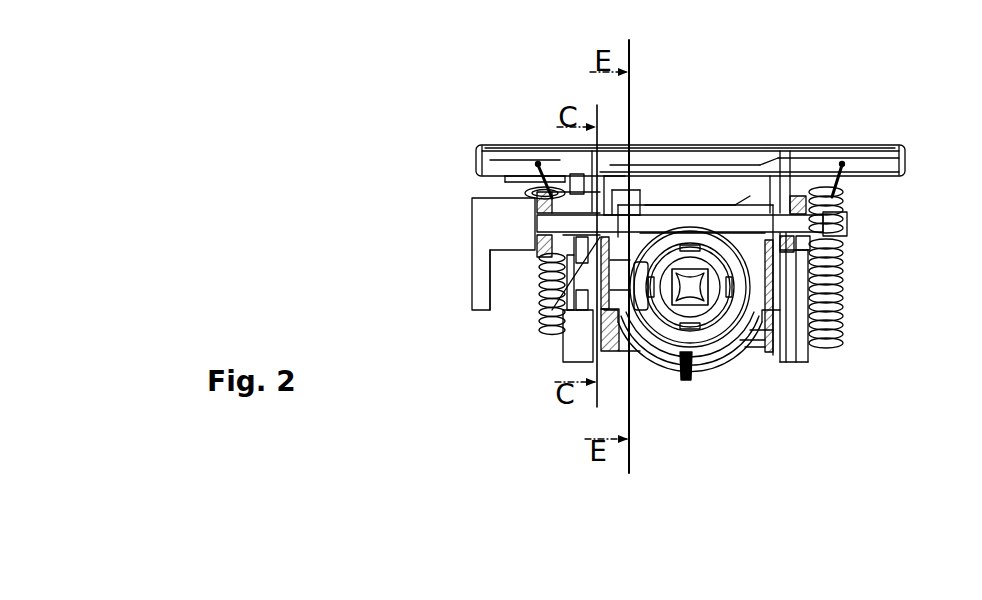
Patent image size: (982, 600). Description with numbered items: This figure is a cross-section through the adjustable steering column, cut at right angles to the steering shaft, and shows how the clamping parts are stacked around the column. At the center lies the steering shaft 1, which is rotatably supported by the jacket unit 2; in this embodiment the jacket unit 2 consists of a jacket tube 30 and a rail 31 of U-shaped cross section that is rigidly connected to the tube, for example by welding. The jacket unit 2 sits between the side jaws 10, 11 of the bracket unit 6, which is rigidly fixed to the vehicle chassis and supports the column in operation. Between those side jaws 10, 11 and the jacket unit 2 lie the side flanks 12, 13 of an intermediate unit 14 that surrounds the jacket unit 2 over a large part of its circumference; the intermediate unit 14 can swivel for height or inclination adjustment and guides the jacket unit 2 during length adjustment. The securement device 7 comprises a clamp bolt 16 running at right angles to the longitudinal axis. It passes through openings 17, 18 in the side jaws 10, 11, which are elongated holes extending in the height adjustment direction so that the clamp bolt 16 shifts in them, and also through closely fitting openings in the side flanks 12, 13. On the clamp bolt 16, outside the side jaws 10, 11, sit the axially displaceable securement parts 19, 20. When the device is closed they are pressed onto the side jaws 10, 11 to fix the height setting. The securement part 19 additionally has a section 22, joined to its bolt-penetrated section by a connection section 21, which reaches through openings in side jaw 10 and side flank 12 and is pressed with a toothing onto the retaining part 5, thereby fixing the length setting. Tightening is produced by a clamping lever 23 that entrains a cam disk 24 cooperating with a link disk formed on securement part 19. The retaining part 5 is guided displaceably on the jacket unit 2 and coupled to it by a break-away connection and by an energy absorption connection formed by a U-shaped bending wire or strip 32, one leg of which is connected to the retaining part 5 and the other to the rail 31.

The steering shaft 1 is at (725, 356).
The jacket unit 2 is at (772, 289).
The retaining part 5 is at (620, 335).
The bracket unit 6 is at (650, 147).
The securement device 7 is at (470, 213).
The side jaw 10 is at (578, 172).
The side jaw 11 is at (790, 176).
The side flank 12 is at (538, 243).
The side flank 13 is at (836, 256).
The intermediate unit 14 is at (769, 352).
The clamp bolt 16 is at (676, 218).
The opening 17 is at (520, 147).
The opening 18 is at (848, 190).
The securement part 19 is at (540, 283).
The securement part 20 is at (842, 241).
The connection section 21 is at (548, 303).
The section 22 is at (590, 305).
The clamping lever 23 is at (482, 258).
The cam disk 24 is at (515, 197).
The jacket tube 30 is at (698, 362).
The rail 31 is at (662, 358).
The bending wire or strip 32 is at (637, 347).